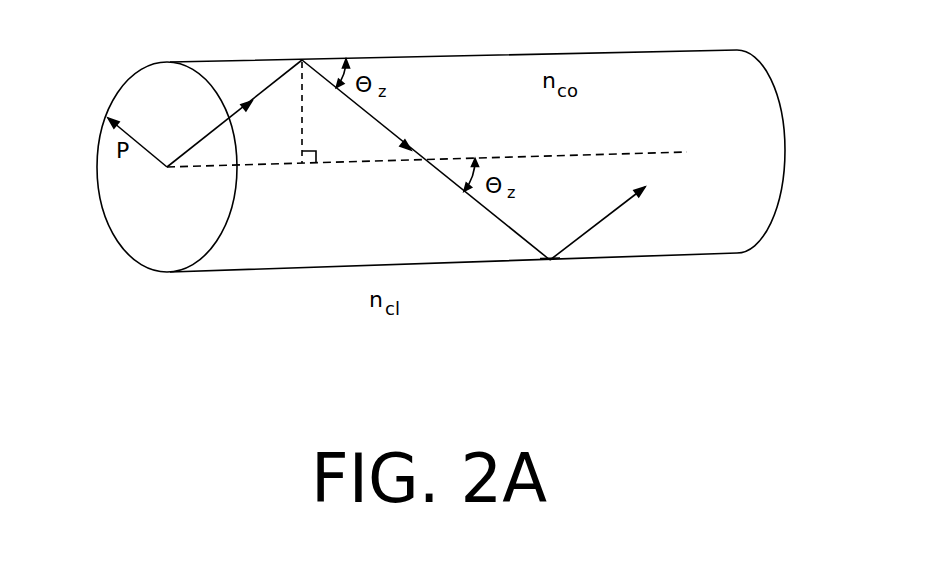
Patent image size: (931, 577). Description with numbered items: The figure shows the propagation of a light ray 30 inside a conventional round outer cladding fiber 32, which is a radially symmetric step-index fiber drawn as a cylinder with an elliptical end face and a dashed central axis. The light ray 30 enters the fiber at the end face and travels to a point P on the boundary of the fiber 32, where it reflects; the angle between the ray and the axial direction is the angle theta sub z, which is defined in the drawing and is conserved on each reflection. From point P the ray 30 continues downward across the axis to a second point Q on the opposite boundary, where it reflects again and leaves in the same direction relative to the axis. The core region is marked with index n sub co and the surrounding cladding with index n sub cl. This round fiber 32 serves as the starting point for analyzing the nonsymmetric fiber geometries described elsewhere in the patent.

The light ray 30 is at (617, 210).
The round outer cladding fiber 32 is at (690, 64).
The point of reflection at core boundary P is at (306, 97).
The point of exit at core boundary Q is at (550, 275).